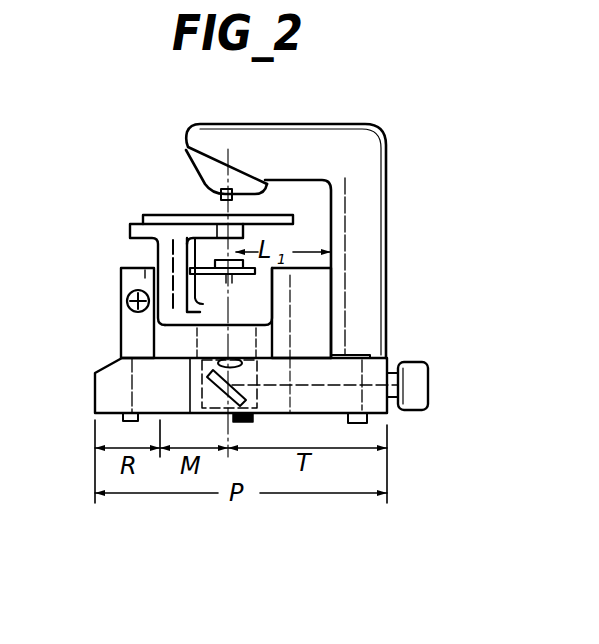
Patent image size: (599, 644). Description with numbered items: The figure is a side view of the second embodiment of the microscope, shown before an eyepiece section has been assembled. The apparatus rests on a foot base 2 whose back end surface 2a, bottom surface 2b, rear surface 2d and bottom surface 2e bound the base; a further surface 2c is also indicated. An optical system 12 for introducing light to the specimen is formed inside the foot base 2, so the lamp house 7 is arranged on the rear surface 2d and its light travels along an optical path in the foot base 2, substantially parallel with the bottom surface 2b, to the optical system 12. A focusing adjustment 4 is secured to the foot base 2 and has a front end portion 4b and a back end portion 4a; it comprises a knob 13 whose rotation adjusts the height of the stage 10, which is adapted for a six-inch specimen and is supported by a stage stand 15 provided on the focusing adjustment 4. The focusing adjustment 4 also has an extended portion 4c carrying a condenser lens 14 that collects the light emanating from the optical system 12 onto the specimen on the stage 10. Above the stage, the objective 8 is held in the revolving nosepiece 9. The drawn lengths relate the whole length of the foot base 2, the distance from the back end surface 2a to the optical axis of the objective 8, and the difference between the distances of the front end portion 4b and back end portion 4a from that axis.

The foot base 2 is at (105, 396).
The back end surface of the foot base 2a is at (302, 278).
The bottom surface of the foot base 2b is at (276, 292).
The step of column 2c is at (335, 297).
The rear surface of the foot base 2d is at (388, 412).
The bottom surface of the foot base 2e is at (338, 413).
The focusing adjustment 4 is at (133, 340).
The back end portion of the focusing adjustment 4a is at (275, 341).
The front end portion of the focusing adjustment 4b is at (121, 330).
The extended portion of the focusing adjustment 4c is at (245, 280).
The lamp house 7 is at (428, 363).
The objective 8 is at (218, 193).
The revolving nosepiece 9 is at (190, 153).
The stage 10 is at (152, 216).
The optical system 12 is at (197, 400).
The knob 13 is at (127, 294).
The condenser lens 14 is at (216, 260).
The stage stand 15 is at (132, 235).